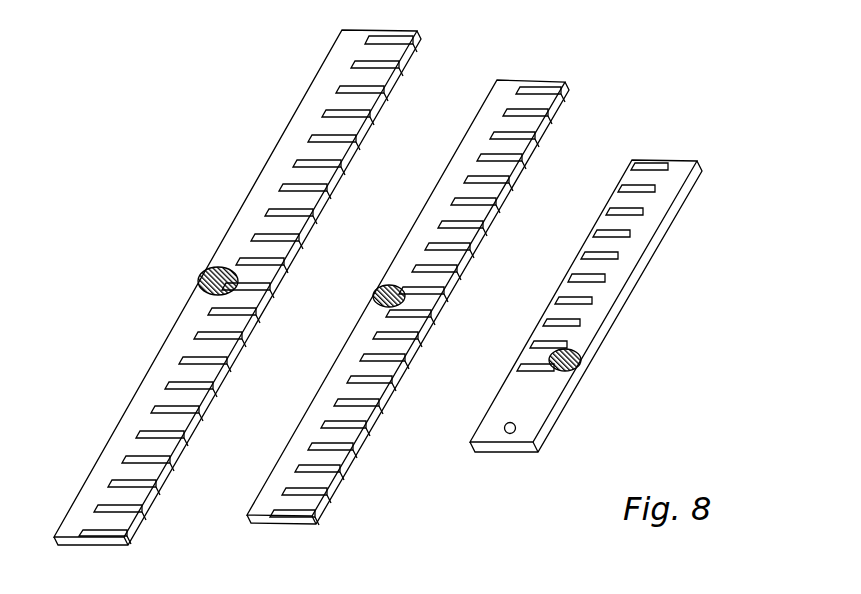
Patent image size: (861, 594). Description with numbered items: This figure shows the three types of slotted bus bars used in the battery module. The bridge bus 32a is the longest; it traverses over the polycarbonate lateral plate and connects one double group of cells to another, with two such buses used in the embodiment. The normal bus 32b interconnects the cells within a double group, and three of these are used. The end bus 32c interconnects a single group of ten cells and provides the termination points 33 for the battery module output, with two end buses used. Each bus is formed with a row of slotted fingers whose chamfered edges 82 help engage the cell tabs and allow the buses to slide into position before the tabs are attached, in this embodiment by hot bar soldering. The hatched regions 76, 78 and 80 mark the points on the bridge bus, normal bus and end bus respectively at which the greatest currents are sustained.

The bridge bus 32a is at (397, 48).
The normal bus 32b is at (540, 98).
The end bus 32c is at (668, 180).
The chamfered edges 82 is at (155, 482).
The point of greatest sustained current on the bridge bus 76 is at (199, 281).
The point of greatest sustained current on the normal bus 78 is at (374, 293).
The point of greatest sustained current on the end bus 80 is at (576, 366).
The termination points 33 is at (509, 432).